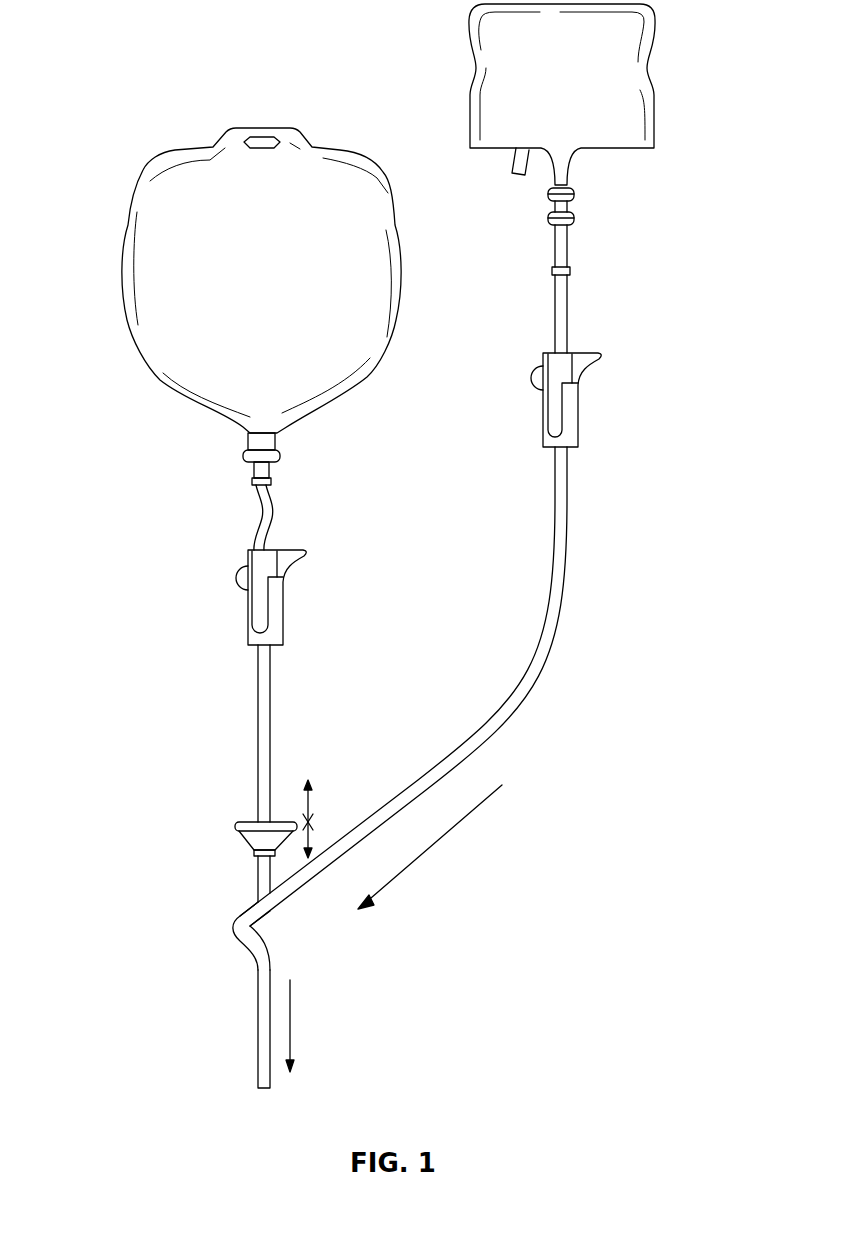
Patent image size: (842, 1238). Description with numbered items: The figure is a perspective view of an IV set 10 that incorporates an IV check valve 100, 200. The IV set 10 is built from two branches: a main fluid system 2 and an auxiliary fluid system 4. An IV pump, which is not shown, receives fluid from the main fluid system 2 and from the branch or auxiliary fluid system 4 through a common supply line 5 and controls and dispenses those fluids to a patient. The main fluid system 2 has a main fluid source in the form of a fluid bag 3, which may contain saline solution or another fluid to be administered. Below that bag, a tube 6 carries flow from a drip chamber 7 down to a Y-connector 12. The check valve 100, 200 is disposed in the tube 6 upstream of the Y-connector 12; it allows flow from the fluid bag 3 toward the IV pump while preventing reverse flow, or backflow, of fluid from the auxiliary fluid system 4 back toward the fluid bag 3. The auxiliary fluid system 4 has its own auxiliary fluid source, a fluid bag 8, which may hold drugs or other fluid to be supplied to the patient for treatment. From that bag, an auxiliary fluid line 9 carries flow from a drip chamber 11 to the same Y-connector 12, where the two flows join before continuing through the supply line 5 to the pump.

The IV set 10 is at (138, 47).
The main fluid system 2 is at (124, 166).
The fluid bag 3 is at (120, 307).
The auxiliary fluid system 4 is at (452, 76).
The supply line 5 is at (262, 1028).
The tube 6 is at (258, 762).
The drip chamber 7 is at (248, 610).
The fluid bag 8 is at (468, 138).
The auxiliary fluid line 9 is at (505, 713).
The drip chamber 11 is at (578, 415).
The Y-connector 12 is at (258, 907).
The check valve 100 is at (210, 847).
The check valve 200 is at (246, 841).